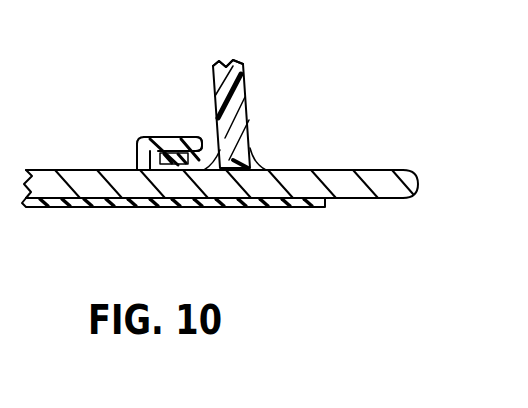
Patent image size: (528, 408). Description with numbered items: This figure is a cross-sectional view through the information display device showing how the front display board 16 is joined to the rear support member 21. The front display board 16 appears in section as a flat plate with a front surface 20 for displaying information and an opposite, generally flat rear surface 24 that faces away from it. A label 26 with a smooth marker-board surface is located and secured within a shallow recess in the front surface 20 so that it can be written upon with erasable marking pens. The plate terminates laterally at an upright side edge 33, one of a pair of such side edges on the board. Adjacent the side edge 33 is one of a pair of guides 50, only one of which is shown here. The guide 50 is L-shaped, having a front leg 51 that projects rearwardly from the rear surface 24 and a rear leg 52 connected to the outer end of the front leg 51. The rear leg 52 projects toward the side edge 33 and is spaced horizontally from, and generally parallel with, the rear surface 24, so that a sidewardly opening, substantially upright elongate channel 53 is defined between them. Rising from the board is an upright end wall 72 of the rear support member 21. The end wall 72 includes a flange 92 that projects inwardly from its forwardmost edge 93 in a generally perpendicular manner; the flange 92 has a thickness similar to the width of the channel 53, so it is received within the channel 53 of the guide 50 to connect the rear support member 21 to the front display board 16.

The front display board 16 is at (368, 217).
The front surface 20 is at (242, 201).
The rear support member 21 is at (260, 74).
The rear surface 24 is at (372, 170).
The label 26 is at (75, 206).
The upright side edge 33 is at (420, 191).
The guide 50 is at (137, 142).
The front leg 51 is at (137, 160).
The rear leg 52 is at (193, 100).
The channel 53 is at (172, 138).
The end wall 72 is at (233, 110).
The flange 92 is at (180, 160).
The forwardmost edge 93 is at (252, 150).